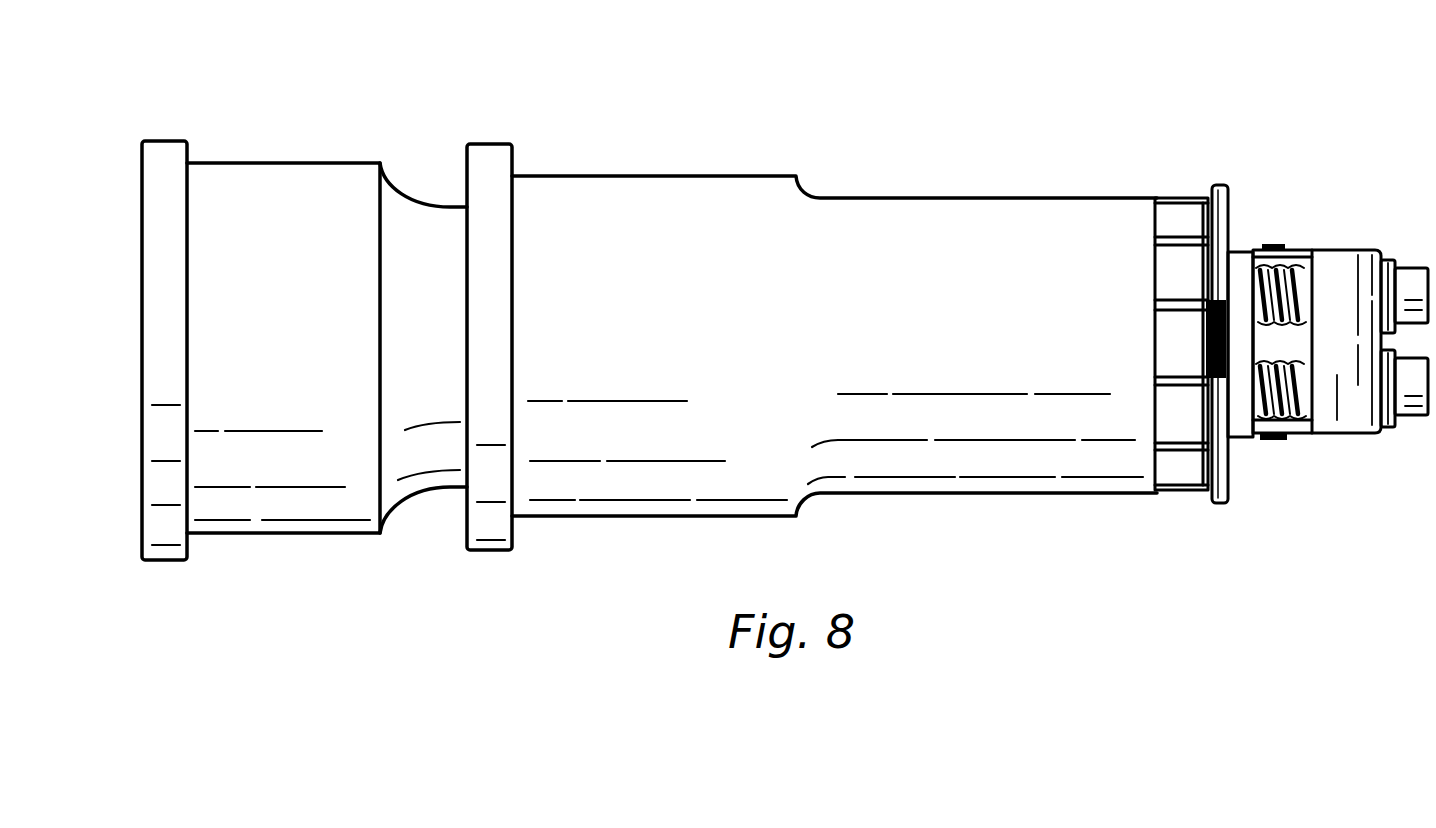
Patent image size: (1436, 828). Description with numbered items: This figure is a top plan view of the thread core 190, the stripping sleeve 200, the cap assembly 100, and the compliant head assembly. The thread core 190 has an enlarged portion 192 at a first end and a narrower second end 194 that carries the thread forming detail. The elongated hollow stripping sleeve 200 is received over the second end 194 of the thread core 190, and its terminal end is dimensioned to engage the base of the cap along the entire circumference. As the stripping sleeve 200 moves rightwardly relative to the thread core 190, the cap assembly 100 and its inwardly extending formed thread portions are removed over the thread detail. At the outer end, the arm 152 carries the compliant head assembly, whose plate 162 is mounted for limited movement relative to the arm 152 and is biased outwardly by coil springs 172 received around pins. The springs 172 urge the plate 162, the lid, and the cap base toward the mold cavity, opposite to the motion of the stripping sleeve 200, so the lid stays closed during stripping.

The thread core 190 is at (269, 137).
The enlarged portion 192 is at (264, 505).
The second end 194 is at (440, 452).
The stripping sleeve 200 is at (985, 226).
The cap assembly 100 is at (1177, 172).
The plate 162 is at (1243, 285).
The arm 152 is at (1338, 280).
The springs 172 is at (1298, 434).